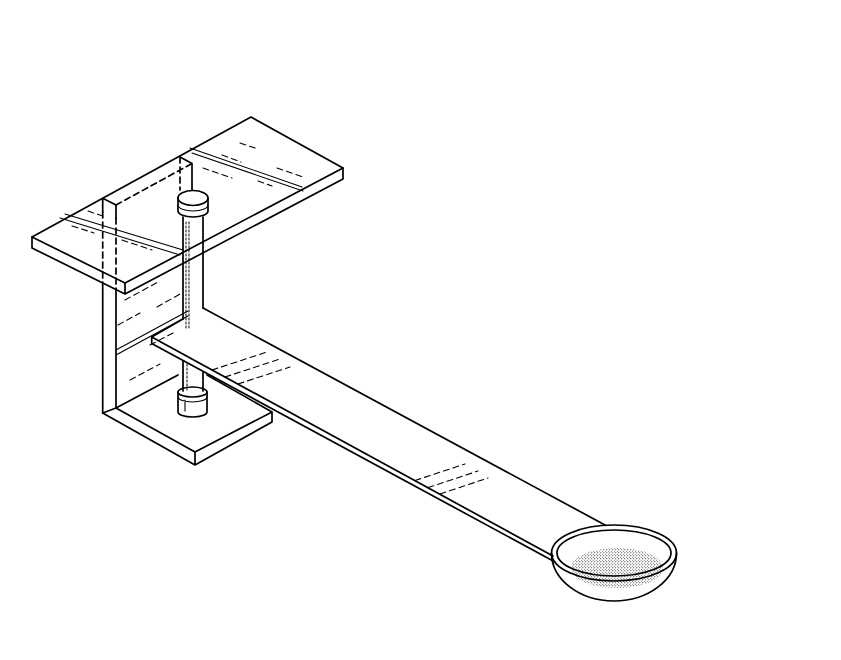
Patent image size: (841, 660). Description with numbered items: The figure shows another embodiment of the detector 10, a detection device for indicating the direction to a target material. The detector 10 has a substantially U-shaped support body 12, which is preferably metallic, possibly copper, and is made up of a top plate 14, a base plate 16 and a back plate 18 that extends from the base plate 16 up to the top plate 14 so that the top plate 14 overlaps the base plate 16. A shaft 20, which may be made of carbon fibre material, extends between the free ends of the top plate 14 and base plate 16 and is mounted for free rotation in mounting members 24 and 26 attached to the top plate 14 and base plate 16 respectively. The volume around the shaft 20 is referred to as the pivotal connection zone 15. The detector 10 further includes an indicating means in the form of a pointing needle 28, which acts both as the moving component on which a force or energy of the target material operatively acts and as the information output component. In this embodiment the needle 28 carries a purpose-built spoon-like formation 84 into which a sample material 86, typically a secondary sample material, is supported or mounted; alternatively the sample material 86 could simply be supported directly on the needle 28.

The detector 10 is at (428, 78).
The support body 12 is at (214, 105).
The top plate 14 is at (283, 148).
The pivotal connection zone 15 is at (311, 242).
The base plate 16 is at (162, 418).
The back plate 18 is at (123, 318).
The shaft 20 is at (198, 278).
The mounting member 24 is at (188, 195).
The mounting member 26 is at (205, 405).
The pointing needle 28 is at (413, 440).
The spoon-like formation 84 is at (663, 558).
The sample material 86 is at (618, 555).